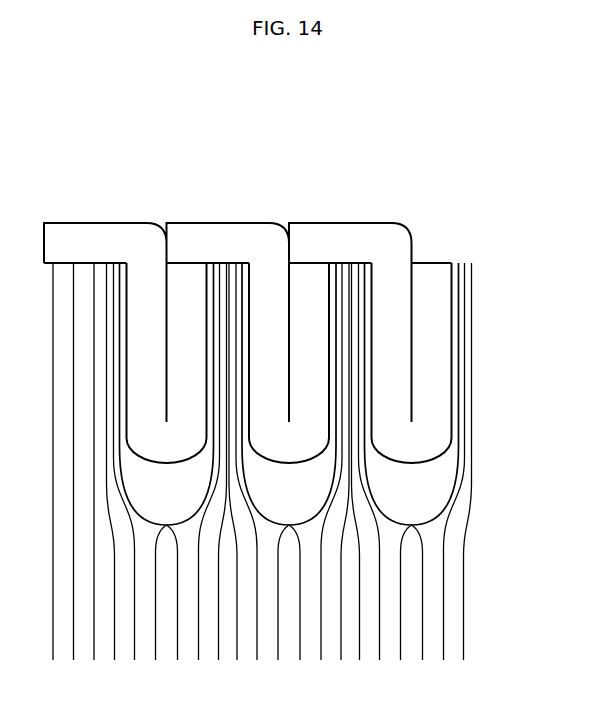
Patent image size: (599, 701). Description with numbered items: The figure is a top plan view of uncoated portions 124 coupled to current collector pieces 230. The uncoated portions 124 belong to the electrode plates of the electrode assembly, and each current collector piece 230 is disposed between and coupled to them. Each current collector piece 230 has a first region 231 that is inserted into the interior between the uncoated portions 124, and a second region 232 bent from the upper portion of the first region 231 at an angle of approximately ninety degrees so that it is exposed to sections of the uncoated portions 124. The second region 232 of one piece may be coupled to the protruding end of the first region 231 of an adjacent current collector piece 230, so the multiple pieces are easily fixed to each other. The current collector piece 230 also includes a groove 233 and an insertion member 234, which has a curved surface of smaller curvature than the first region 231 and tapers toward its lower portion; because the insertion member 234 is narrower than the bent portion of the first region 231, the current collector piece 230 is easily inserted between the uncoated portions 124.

The current collector piece 230 is at (440, 163).
The first region 231 is at (397, 352).
The second region 232 is at (320, 230).
The groove 233 is at (438, 262).
The insertion member 234 is at (422, 495).
The uncoated portions 124 is at (463, 556).